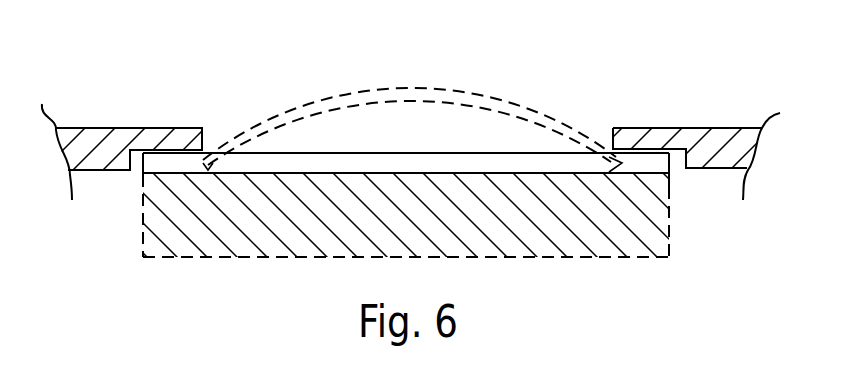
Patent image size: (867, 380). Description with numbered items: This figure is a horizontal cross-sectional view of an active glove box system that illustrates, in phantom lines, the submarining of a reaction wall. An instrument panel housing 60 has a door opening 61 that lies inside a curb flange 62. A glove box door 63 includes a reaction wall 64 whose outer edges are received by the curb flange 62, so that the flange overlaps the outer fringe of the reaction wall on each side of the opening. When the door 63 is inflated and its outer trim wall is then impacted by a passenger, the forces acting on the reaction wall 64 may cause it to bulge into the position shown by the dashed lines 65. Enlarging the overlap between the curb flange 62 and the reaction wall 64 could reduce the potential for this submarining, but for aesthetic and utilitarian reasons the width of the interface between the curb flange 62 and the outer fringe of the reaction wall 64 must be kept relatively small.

The instrument panel housing 60 is at (732, 126).
The door opening 61 is at (611, 146).
The curb flange 62 is at (162, 138).
The glove box door 63 is at (139, 233).
The reaction wall 64 is at (395, 160).
The dashed lines 65 is at (522, 107).